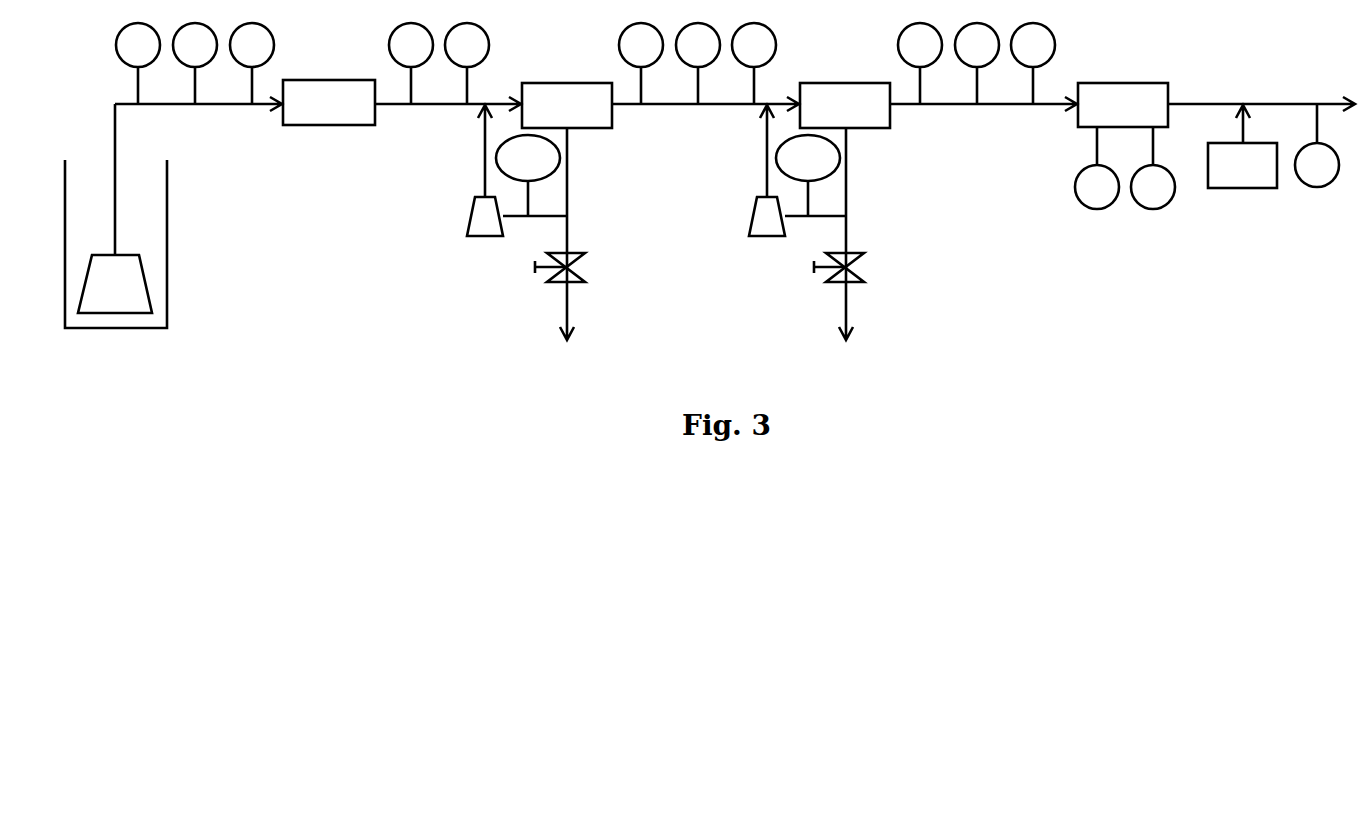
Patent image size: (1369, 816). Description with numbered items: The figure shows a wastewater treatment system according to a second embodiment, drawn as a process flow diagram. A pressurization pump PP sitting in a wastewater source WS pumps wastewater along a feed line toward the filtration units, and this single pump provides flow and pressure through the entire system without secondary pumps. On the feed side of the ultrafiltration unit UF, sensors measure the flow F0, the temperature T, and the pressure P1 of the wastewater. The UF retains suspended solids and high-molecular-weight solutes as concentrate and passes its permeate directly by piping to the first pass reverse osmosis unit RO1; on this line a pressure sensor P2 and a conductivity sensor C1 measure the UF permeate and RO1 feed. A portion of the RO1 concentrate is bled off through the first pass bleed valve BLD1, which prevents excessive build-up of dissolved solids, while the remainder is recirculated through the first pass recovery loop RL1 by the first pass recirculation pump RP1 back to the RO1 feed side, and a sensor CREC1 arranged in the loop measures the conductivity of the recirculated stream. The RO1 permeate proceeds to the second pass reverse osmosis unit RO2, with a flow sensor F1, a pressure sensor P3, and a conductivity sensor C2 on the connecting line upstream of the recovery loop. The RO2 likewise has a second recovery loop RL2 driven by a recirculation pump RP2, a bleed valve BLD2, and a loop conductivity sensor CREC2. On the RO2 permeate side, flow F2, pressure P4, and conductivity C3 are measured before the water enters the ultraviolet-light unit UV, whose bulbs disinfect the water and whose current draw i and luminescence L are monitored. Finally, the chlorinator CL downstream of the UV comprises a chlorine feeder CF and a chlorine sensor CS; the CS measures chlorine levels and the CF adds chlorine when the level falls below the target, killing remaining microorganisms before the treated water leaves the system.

The wastewater source WS is at (167, 238).
The pressurization pump PP is at (115, 284).
The flow sensor F0 is at (138, 63).
The temperature sensor T is at (195, 63).
The pressure sensor P1 is at (252, 63).
The ultrafiltration unit UF is at (329, 102).
The pressure sensor P2 is at (411, 63).
The conductivity sensor C1 is at (467, 63).
The first pass reverse osmosis unit RO1 is at (567, 105).
The first pass recovery loop RL1 is at (483, 145).
The first pass recirculation pump RP1 is at (472, 213).
The conductivity sensor of the first pass recovery loop CREC1 is at (528, 175).
The first pass bleed valve BLD1 is at (570, 263).
The flow sensor F1 is at (641, 63).
The pressure sensor P3 is at (698, 63).
The conductivity sensor C2 is at (754, 63).
The second pass reverse osmosis unit RO2 is at (845, 105).
The second pass recovery loop RL2 is at (765, 138).
The second pass recirculation pump RP2 is at (752, 213).
The conductivity sensor of the second pass recovery loop CREC2 is at (808, 175).
The second pass bleed valve BLD2 is at (849, 263).
The flow sensor F2 is at (920, 63).
The pressure sensor P4 is at (977, 63).
The conductivity sensor C3 is at (1033, 63).
The ultraviolet-light unit UV is at (1123, 105).
The current draw sensor i is at (1097, 168).
The luminescence sensor L is at (1153, 168).
The chlorine feeder CF is at (1242, 146).
The chlorine sensor CS is at (1317, 145).
The chlorinator CL is at (1272, 177).